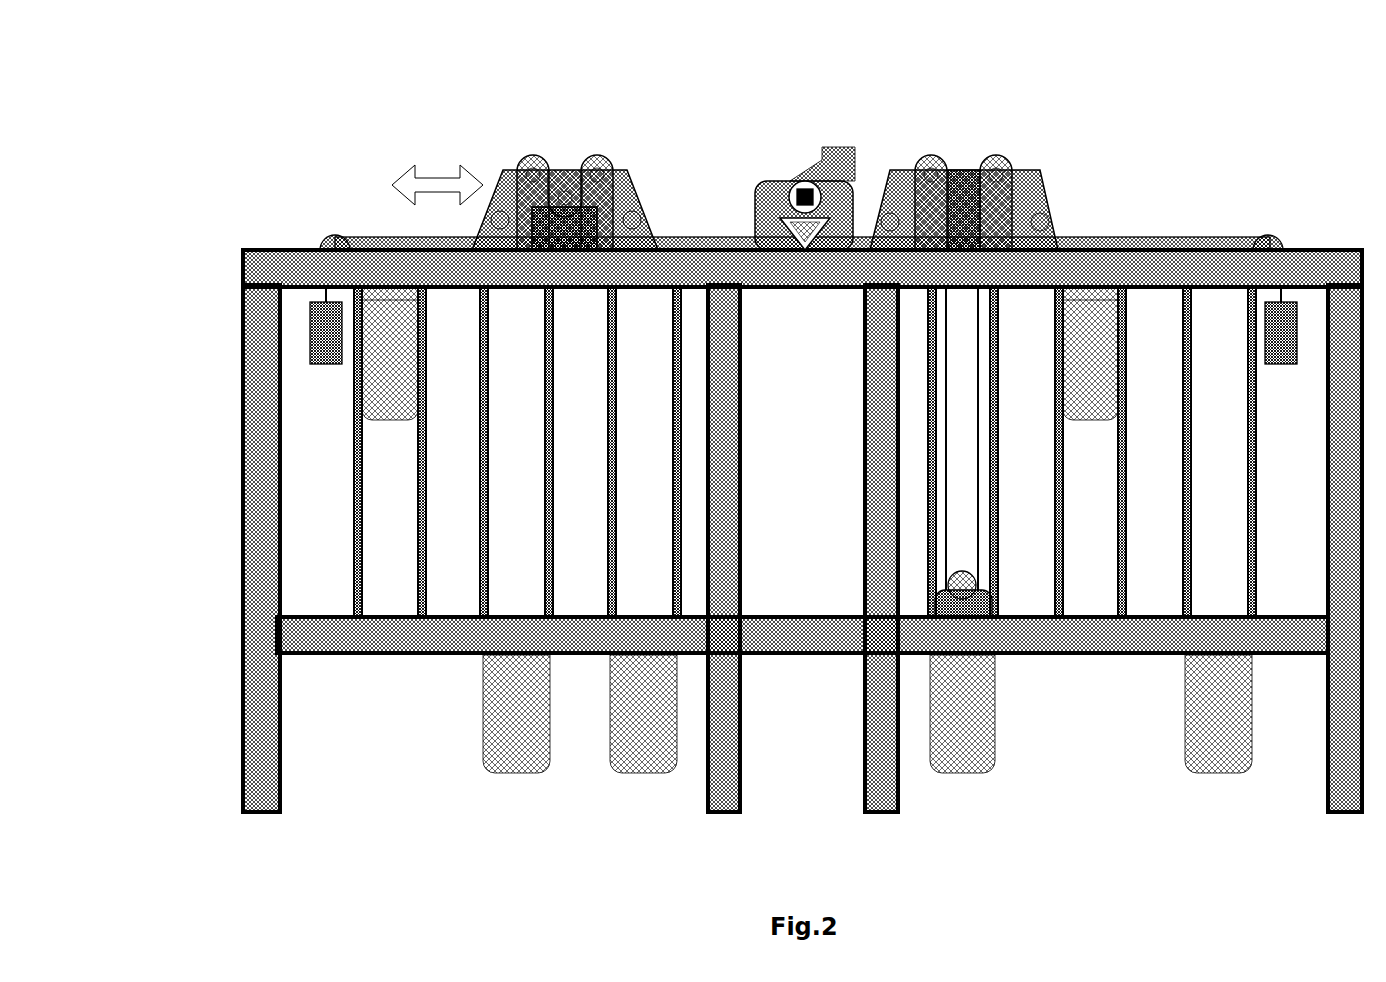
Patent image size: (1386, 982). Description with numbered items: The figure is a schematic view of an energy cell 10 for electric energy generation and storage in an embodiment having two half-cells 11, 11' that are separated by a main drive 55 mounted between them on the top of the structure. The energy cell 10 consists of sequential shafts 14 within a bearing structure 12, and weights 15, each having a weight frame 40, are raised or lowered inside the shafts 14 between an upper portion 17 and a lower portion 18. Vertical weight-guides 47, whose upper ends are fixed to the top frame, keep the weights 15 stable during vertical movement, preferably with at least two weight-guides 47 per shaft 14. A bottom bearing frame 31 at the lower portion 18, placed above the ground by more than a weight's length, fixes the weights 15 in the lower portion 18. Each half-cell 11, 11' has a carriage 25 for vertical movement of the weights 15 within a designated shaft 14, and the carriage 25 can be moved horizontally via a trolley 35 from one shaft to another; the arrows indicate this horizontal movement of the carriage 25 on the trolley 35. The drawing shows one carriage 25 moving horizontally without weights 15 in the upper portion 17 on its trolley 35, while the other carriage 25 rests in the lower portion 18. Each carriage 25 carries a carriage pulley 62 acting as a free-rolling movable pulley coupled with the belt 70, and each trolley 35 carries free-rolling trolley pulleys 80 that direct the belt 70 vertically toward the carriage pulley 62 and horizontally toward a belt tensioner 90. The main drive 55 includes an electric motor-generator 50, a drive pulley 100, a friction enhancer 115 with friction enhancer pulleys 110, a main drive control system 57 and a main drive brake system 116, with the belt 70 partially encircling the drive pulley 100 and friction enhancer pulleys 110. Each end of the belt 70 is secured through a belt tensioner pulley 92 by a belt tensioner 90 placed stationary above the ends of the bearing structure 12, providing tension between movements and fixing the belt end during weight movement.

The energy cell 10 is at (993, 67).
The half-cell 11 is at (418, 156).
The half-cell 11' is at (1200, 146).
The bearing structure 12 is at (283, 812).
The shaft 14 is at (640, 390).
The weight 15 is at (412, 412).
The upper portion 17 is at (243, 263).
The lower portion 18 is at (243, 633).
The carriage 25 is at (613, 203).
The bottom bearing frame 31 is at (388, 638).
The trolley 35 is at (495, 182).
The weight frame 40 is at (408, 295).
The weight-guide 47 is at (415, 582).
The electric motor-generator 50 is at (823, 153).
The main drive 55 is at (853, 205).
The main drive control system 57 is at (855, 147).
The carriage pulley 62 is at (565, 195).
The belt 70 is at (977, 453).
The trolley pulley 80 is at (517, 162).
The belt tensioner 90 is at (330, 365).
The belt tensioner pulley 92 is at (332, 237).
The drive pulley 100 is at (797, 182).
The friction enhancer pulley 110 is at (757, 224).
The friction enhancer 115 is at (800, 250).
The main drive brake system 116 is at (790, 185).